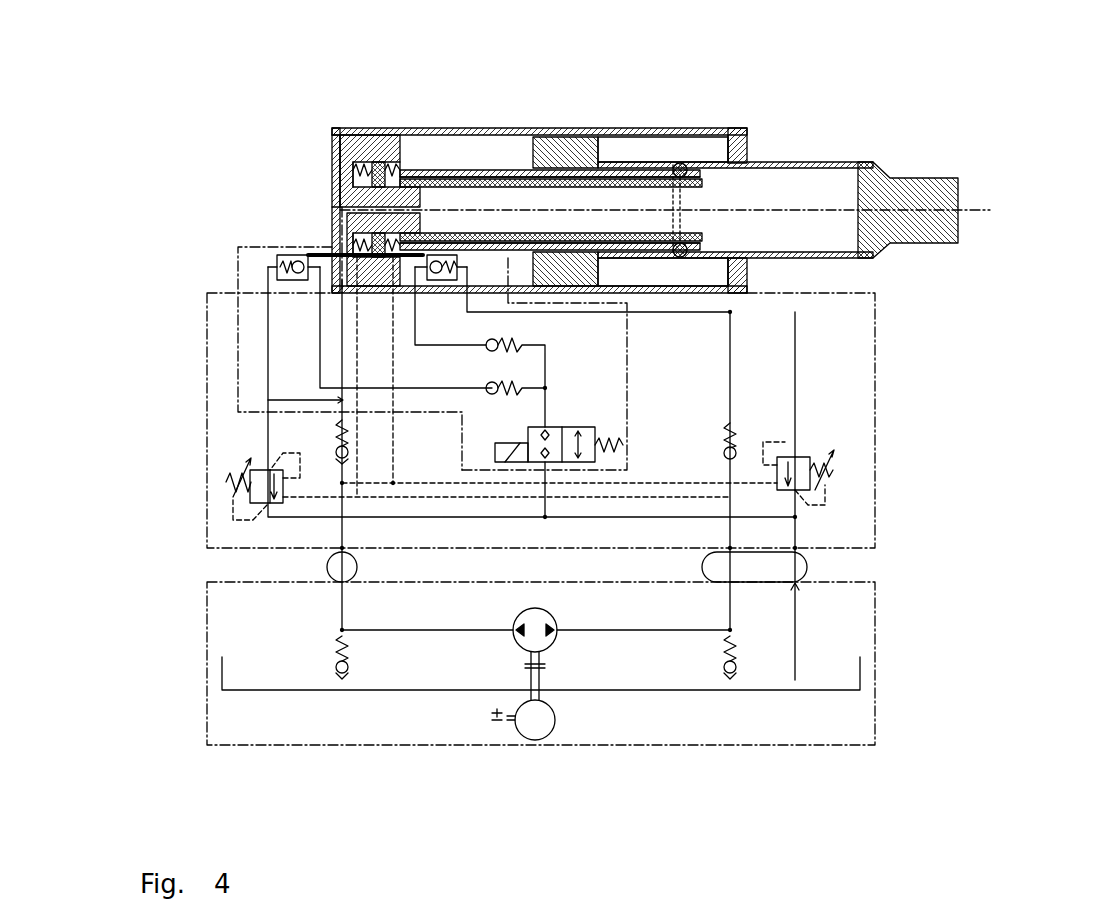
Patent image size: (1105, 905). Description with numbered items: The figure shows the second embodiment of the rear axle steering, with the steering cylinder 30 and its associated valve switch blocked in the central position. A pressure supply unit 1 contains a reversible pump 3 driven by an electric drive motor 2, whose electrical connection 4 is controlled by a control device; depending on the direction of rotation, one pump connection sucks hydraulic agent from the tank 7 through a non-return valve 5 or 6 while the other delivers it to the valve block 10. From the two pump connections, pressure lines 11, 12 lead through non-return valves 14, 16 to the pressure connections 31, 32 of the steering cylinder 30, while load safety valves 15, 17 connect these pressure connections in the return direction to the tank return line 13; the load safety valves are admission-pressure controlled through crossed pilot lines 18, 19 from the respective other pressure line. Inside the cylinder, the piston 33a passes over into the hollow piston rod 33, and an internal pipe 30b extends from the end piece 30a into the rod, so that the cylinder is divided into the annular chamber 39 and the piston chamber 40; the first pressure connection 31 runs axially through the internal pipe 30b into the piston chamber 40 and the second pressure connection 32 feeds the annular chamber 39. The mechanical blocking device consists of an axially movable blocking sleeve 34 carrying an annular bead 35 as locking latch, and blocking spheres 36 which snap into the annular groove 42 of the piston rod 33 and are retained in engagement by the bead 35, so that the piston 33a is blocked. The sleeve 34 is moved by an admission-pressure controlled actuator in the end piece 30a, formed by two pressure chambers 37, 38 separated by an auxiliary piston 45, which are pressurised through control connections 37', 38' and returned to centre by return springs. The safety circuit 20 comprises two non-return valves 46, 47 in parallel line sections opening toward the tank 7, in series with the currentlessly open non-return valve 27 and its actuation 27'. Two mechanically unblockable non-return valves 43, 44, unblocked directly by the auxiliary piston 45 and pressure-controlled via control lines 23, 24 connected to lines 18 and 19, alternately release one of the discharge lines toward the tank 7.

The pressure supply unit 1 is at (217, 607).
The electric drive motor 2 is at (533, 740).
The reversible pump 3 is at (560, 624).
The electrical connection 4 is at (493, 712).
The non-return valve 5 is at (340, 665).
The non-return valve 6 is at (737, 670).
The tank 7 is at (835, 666).
The valve block 10 is at (847, 333).
The pressure line 11 is at (340, 533).
The pressure line 12 is at (733, 507).
The tank return line 13 is at (797, 549).
The non-return valve 14 is at (335, 450).
The load safety valve 15 is at (260, 488).
The non-return valve 16 is at (736, 451).
The load safety valve 17 is at (797, 463).
The pilot line 18 is at (418, 483).
The pilot line 19 is at (480, 497).
The safety circuit 20 is at (610, 318).
The control line 23 is at (268, 386).
The control line 24 is at (338, 422).
The non-return valve 27 is at (800, 446).
The valve actuator 27' is at (787, 401).
The steering cylinder 30 is at (334, 128).
The end piece 30a is at (332, 150).
The internal pipe 30b is at (655, 177).
The first pressure connection 31 is at (340, 222).
The second pressure connection 32 is at (748, 283).
The piston rod 33 is at (814, 162).
The piston 33a is at (558, 137).
The blocking sleeve 34 is at (512, 170).
The annular bead 35 is at (652, 163).
The blocking sphere 36 is at (747, 128).
The pressure chamber 37 is at (391, 105).
The control connection 37' is at (410, 365).
The pressure chamber 38 is at (278, 166).
The control connection 38' is at (306, 247).
The first working chamber 39 is at (620, 150).
The second working chamber 40 is at (452, 195).
The annular groove 42 is at (684, 163).
The mechanically unblockable non-return valve 43 is at (410, 300).
The mechanically unblockable non-return valve 44 is at (277, 252).
The auxiliary piston 45 is at (375, 163).
The non-return valve 46 is at (487, 345).
The non-return valve 47 is at (487, 388).